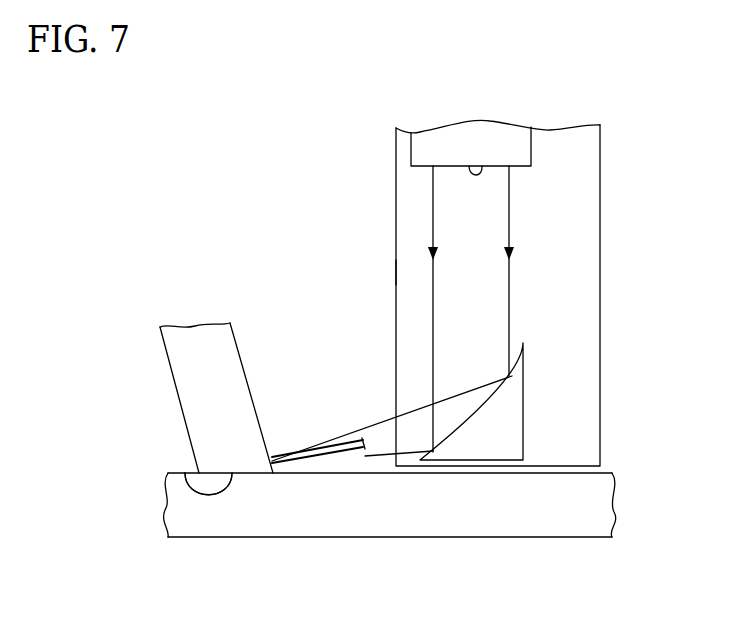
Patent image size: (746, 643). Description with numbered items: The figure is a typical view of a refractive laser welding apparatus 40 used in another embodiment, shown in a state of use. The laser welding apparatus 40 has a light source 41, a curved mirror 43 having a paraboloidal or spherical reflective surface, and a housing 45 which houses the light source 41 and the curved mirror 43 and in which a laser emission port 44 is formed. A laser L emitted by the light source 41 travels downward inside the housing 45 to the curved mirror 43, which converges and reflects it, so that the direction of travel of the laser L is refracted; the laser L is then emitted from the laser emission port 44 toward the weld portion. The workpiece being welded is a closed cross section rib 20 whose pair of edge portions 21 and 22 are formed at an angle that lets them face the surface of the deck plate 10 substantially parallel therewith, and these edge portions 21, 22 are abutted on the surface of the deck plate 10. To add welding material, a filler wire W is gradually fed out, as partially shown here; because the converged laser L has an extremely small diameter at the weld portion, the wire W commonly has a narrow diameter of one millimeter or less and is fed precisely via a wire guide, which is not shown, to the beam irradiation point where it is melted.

The deck plate 10 is at (283, 528).
The closed cross section rib 20 is at (216, 369).
The edge portion 21 is at (186, 474).
The edge portion 22 is at (208, 484).
The laser welding apparatus 40 is at (620, 205).
The light source 41 is at (486, 172).
The curved mirror 43 is at (491, 426).
The laser emission port 44 is at (390, 414).
The housing 45 is at (396, 272).
The laser L is at (511, 296).
The filler wire W is at (325, 448).